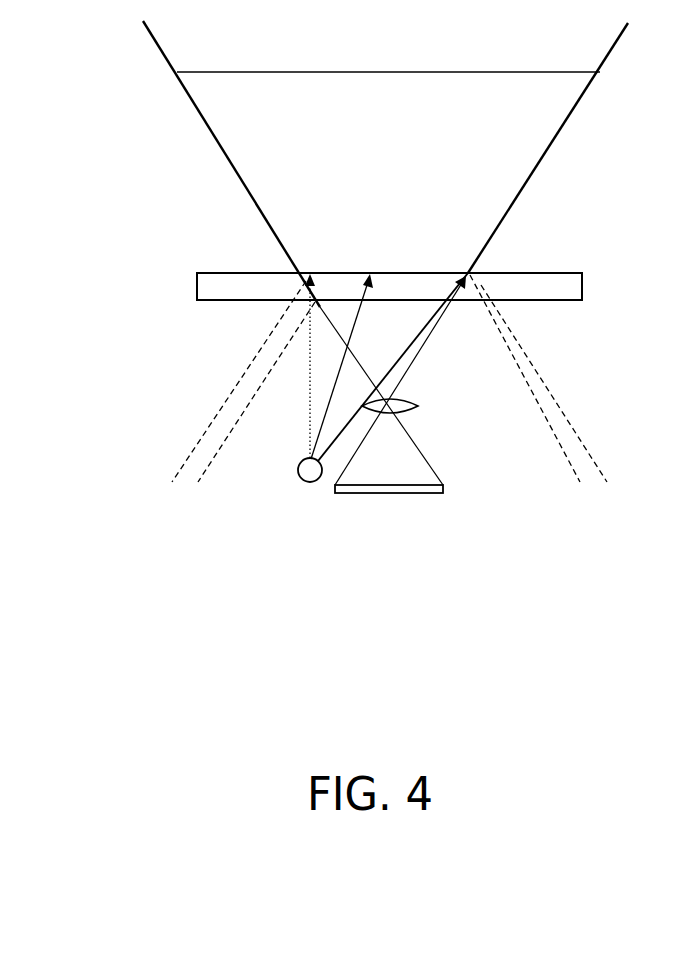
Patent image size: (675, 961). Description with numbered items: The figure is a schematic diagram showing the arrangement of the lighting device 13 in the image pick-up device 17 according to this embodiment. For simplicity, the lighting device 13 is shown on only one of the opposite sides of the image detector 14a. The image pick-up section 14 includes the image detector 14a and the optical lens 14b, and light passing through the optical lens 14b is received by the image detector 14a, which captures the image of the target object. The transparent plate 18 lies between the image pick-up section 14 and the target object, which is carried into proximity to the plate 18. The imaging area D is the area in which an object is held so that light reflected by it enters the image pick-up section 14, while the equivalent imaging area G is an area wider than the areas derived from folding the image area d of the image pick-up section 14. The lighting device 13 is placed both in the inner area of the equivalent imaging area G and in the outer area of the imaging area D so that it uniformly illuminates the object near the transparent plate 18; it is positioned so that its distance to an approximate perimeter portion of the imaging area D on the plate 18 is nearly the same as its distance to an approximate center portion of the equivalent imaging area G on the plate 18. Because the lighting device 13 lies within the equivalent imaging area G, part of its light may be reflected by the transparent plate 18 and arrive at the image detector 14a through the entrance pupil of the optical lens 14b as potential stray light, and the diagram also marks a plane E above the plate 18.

The lighting device 13 is at (308, 482).
The image pick-up section 14 is at (477, 403).
The image detector 14a is at (443, 492).
The optical lens 14b is at (407, 400).
The image pick-up device 17 is at (116, 364).
The transparent plate 18 is at (548, 272).
The imaging area D is at (323, 312).
The image area d is at (423, 317).
The detection area plane E is at (470, 92).
The equivalent imaging area G is at (263, 413).